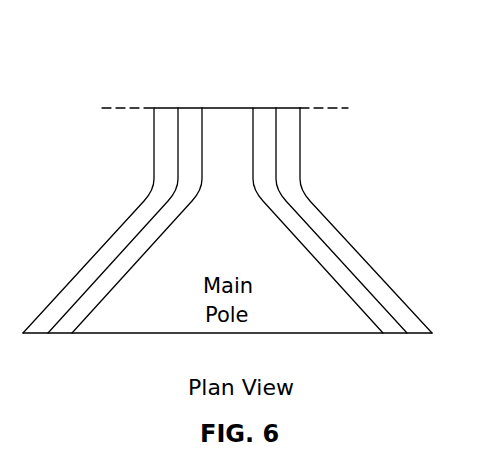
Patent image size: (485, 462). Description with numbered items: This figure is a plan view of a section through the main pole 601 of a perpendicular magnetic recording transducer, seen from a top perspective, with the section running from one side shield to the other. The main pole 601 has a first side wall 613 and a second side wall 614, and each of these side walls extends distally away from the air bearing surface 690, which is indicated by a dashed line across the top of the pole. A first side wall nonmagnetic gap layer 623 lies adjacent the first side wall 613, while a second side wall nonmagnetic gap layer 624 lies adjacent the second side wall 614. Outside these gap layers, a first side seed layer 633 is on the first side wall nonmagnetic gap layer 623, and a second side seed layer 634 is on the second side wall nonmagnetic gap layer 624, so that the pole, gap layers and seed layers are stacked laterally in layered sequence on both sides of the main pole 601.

The main pole 601 is at (220, 133).
The first side wall 613 is at (253, 162).
The second side wall 614 is at (200, 162).
The first side wall nonmagnetic gap layer 623 is at (265, 120).
The second side wall nonmagnetic gap layer 624 is at (190, 118).
The first side seed layer 633 is at (287, 120).
The second side seed layer 634 is at (163, 115).
The ABS 690 is at (225, 110).